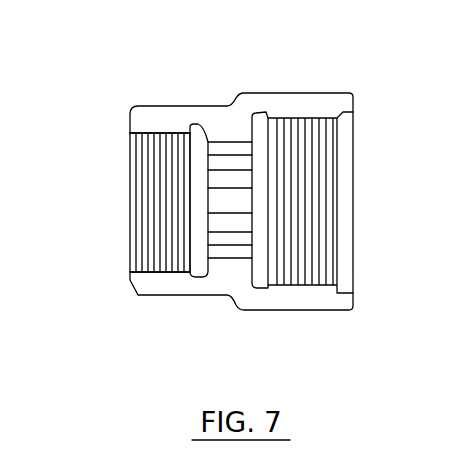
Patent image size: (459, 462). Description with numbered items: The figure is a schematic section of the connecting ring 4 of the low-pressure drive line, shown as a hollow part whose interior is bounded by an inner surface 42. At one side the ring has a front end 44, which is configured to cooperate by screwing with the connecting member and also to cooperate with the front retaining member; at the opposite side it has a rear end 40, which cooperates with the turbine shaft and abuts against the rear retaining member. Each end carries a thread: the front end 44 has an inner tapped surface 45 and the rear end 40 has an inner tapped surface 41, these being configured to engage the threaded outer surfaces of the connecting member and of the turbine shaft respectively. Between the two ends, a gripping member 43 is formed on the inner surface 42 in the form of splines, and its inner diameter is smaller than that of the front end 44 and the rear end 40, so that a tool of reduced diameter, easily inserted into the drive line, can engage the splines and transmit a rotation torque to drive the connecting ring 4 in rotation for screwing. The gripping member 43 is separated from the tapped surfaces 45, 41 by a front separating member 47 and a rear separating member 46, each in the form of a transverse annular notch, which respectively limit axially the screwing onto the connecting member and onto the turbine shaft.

The connecting ring 4 is at (110, 150).
The rear end 40 is at (257, 83).
The inner tapped surface 41 is at (330, 288).
The inner surface 42 is at (162, 266).
The gripping member 43 is at (228, 262).
The front end 44 is at (213, 83).
The inner tapped surface 45 is at (148, 270).
The rear separating member 46 is at (265, 291).
The front separating member 47 is at (196, 275).